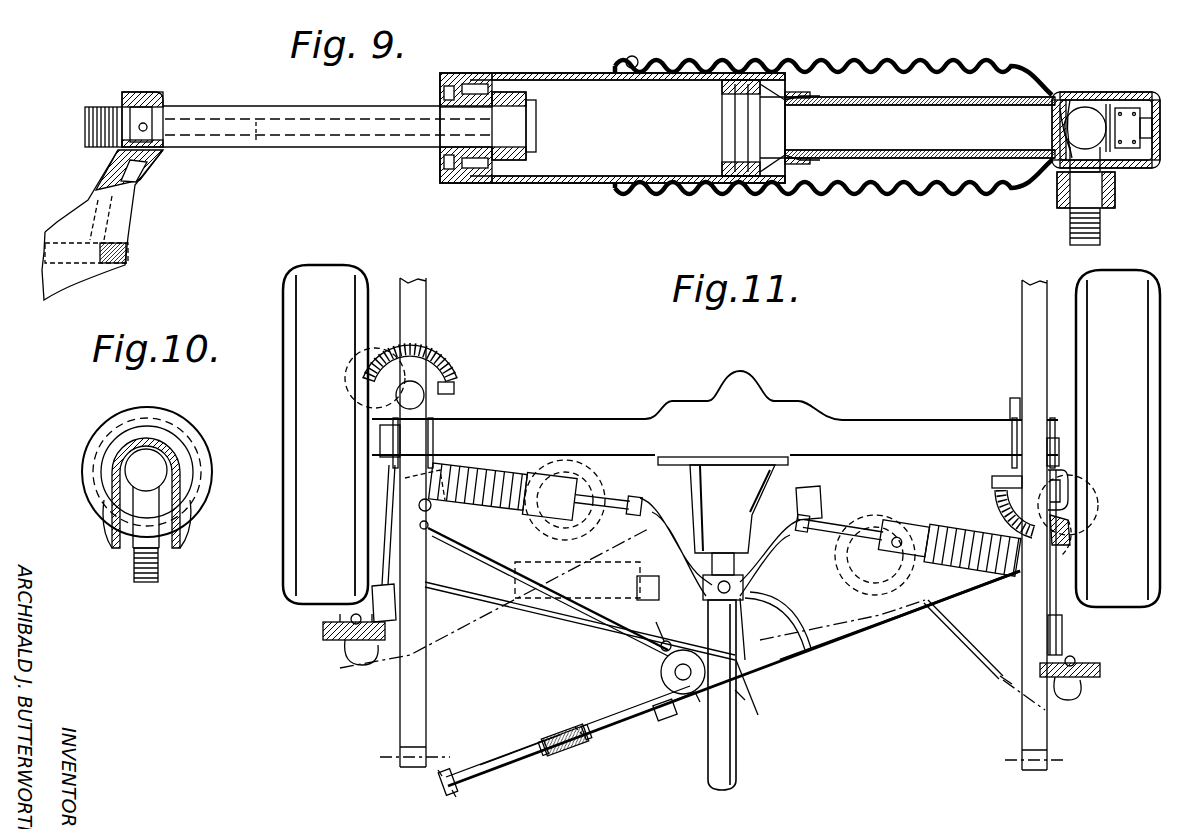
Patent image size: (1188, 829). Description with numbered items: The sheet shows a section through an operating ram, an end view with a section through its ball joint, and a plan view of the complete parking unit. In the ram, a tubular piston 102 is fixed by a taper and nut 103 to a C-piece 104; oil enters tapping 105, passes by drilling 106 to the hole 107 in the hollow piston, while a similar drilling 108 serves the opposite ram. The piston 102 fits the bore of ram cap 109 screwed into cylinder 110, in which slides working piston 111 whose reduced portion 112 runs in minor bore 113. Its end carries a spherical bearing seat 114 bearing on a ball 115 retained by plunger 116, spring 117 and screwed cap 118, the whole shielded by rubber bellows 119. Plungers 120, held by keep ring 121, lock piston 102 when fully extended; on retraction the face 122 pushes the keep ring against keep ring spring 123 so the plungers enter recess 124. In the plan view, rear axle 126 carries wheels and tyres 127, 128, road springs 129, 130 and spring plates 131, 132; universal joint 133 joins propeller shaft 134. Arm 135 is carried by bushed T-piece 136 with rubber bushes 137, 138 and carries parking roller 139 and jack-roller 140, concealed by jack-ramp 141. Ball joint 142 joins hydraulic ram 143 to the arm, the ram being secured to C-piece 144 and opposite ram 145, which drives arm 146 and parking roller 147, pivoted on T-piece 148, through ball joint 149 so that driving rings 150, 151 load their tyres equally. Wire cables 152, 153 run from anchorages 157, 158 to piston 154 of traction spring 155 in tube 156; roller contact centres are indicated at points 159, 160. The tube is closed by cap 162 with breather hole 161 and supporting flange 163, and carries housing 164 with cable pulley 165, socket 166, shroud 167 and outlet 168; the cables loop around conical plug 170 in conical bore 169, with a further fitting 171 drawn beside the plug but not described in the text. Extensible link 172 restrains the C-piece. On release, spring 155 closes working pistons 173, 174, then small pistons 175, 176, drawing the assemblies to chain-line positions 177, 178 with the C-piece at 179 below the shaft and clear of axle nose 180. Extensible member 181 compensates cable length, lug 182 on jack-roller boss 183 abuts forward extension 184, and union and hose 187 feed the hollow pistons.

In FIG. 9, the tubular piston 102 is at (228, 106).
In FIG. 9, the nut 103 is at (118, 96).
In FIG. 9, the C-piece 104 is at (102, 178).
In FIG. 9, the tapping 105 is at (130, 250).
In FIG. 9, the drilling 106 is at (146, 205).
In FIG. 9, the hole 107 is at (256, 150).
In FIG. 9, the drilling 108 is at (57, 228).
In FIG. 9, the ram cap 109 is at (440, 162).
In FIG. 9, the cylinder 110 is at (560, 183).
In FIG. 9, the working piston 111 is at (724, 128).
In FIG. 9, the reduced portion of working piston 112 is at (890, 97).
In FIG. 10, the reduced portion of working piston 112 is at (116, 466).
In FIG. 9, the minor bore 113 is at (792, 176).
In FIG. 9, the spherical bearing seat 114 is at (1056, 122).
In FIG. 10, the spherical bearing seat 114 is at (160, 440).
In FIG. 9, the ball 115 is at (1083, 108).
In FIG. 10, the ball 115 is at (138, 446).
In FIG. 9, the plunger 116 is at (1108, 104).
In FIG. 9, the spring 117 is at (1130, 108).
In FIG. 9, the screwed cap 118 is at (1140, 168).
In FIG. 9, the rubber bellows 119 is at (826, 66).
In FIG. 10, the rubber bellows 119 is at (182, 440).
In FIG. 9, the plungers 120 is at (534, 152).
In FIG. 9, the keep ring 121 is at (498, 165).
In FIG. 9, the face of piston 122 is at (726, 85).
In FIG. 9, the keep ring spring 123 is at (474, 183).
In FIG. 9, the recess 124 is at (745, 165).
In FIG. 11, the rear axle 126 is at (905, 420).
In FIG. 11, the wheel and tyre 127 is at (1118, 600).
In FIG. 11, the wheel and tyre 128 is at (296, 428).
In FIG. 11, the road spring 129 is at (1022, 360).
In FIG. 11, the road spring 130 is at (428, 312).
In FIG. 11, the spring plate 131 is at (1012, 408).
In FIG. 11, the spring plate 132 is at (388, 470).
In FIG. 11, the universal joint 133 is at (708, 594).
In FIG. 11, the propeller shaft 134 is at (736, 742).
In FIG. 11, the arm 135 is at (1058, 630).
In FIG. 11, the bushed T-piece 136 is at (1068, 698).
In FIG. 11, the rubber bush 137 is at (1085, 663).
In FIG. 11, the rubber bush 138 is at (1092, 672).
In FIG. 11, the parking roller 139 is at (998, 516).
In FIG. 11, the jack-roller 140 is at (1070, 484).
In FIG. 11, the jack-ramp 141 is at (1004, 478).
In FIG. 11, the ball joint 142 is at (990, 568).
In FIG. 11, the hydraulic ram 143 is at (910, 526).
In FIG. 11, the C-piece 144 is at (790, 528).
In FIG. 11, the ram 145 is at (548, 470).
In FIG. 11, the arm 146 is at (384, 563).
In FIG. 11, the parking roller 147 is at (448, 364).
In FIG. 11, the T-piece 148 is at (355, 650).
In FIG. 11, the ball joint 149 is at (418, 506).
In FIG. 11, the driving ring 150 is at (1080, 520).
In FIG. 11, the driving ring 151 is at (383, 340).
In FIG. 11, the wire cable 152 is at (790, 655).
In FIG. 11, the wire cable 153 is at (592, 616).
In FIG. 11, the piston 154 is at (588, 746).
In FIG. 11, the traction spring 155 is at (580, 724).
In FIG. 11, the tube 156 is at (516, 766).
In FIG. 11, the anchorage 157 is at (1020, 600).
In FIG. 11, the anchorage 158 is at (430, 566).
In FIG. 11, the point 159 is at (1040, 456).
In FIG. 11, the point 160 is at (456, 390).
In FIG. 11, the breather hole 161 is at (448, 770).
In FIG. 11, the cap 162 is at (441, 784).
In FIG. 11, the supporting flange 163 is at (458, 786).
In FIG. 11, the housing 164 is at (690, 706).
In FIG. 11, the cable pulley 165 is at (662, 668).
In FIG. 11, the socket 166 is at (664, 718).
In FIG. 11, the shroud 167 is at (740, 694).
In FIG. 11, the outlet 168 is at (660, 640).
In FIG. 11, the conical bore 169 is at (566, 732).
In FIG. 11, the conical plug 170 is at (555, 740).
In FIG. 11, the lock nut 171 is at (562, 750).
In FIG. 11, the extensible link 172 is at (758, 600).
In FIG. 11, the working piston 173 is at (1000, 545).
In FIG. 11, the working piston 174 is at (470, 462).
In FIG. 11, the small piston 175 is at (842, 522).
In FIG. 11, the small piston 176 is at (618, 495).
In FIG. 11, the retracted position 177 is at (838, 566).
In FIG. 11, the retracted position 178 is at (647, 576).
In FIG. 11, the retracted position of C-piece 179 is at (762, 684).
In FIG. 11, the axle nose 180 is at (696, 502).
In FIG. 11, the extensible member 181 is at (440, 532).
In FIG. 11, the lug 182 is at (1060, 474).
In FIG. 11, the jack-roller boss 183 is at (1076, 546).
In FIG. 11, the forward extension 184 is at (1072, 500).
In FIG. 11, the union and hose 187 is at (845, 648).